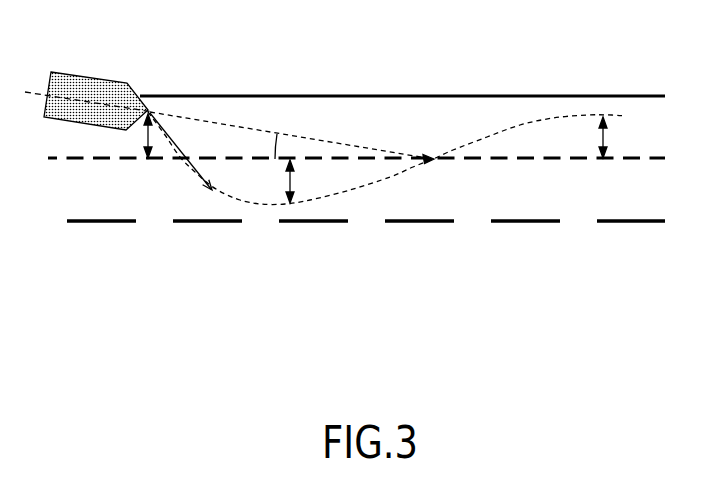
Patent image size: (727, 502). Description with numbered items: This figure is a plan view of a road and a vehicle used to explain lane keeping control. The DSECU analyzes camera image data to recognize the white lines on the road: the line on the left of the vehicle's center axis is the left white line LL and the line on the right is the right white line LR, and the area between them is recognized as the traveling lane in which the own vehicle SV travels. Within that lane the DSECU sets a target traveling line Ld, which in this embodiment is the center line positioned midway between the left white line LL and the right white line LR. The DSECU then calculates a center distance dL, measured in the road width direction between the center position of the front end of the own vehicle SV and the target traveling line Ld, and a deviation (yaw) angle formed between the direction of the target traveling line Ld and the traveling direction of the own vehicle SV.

The own vehicle SV is at (90, 74).
The left white line LL is at (635, 94).
The right white line LR is at (613, 223).
The target traveling line Ld is at (638, 155).
The center distance dL is at (147, 136).